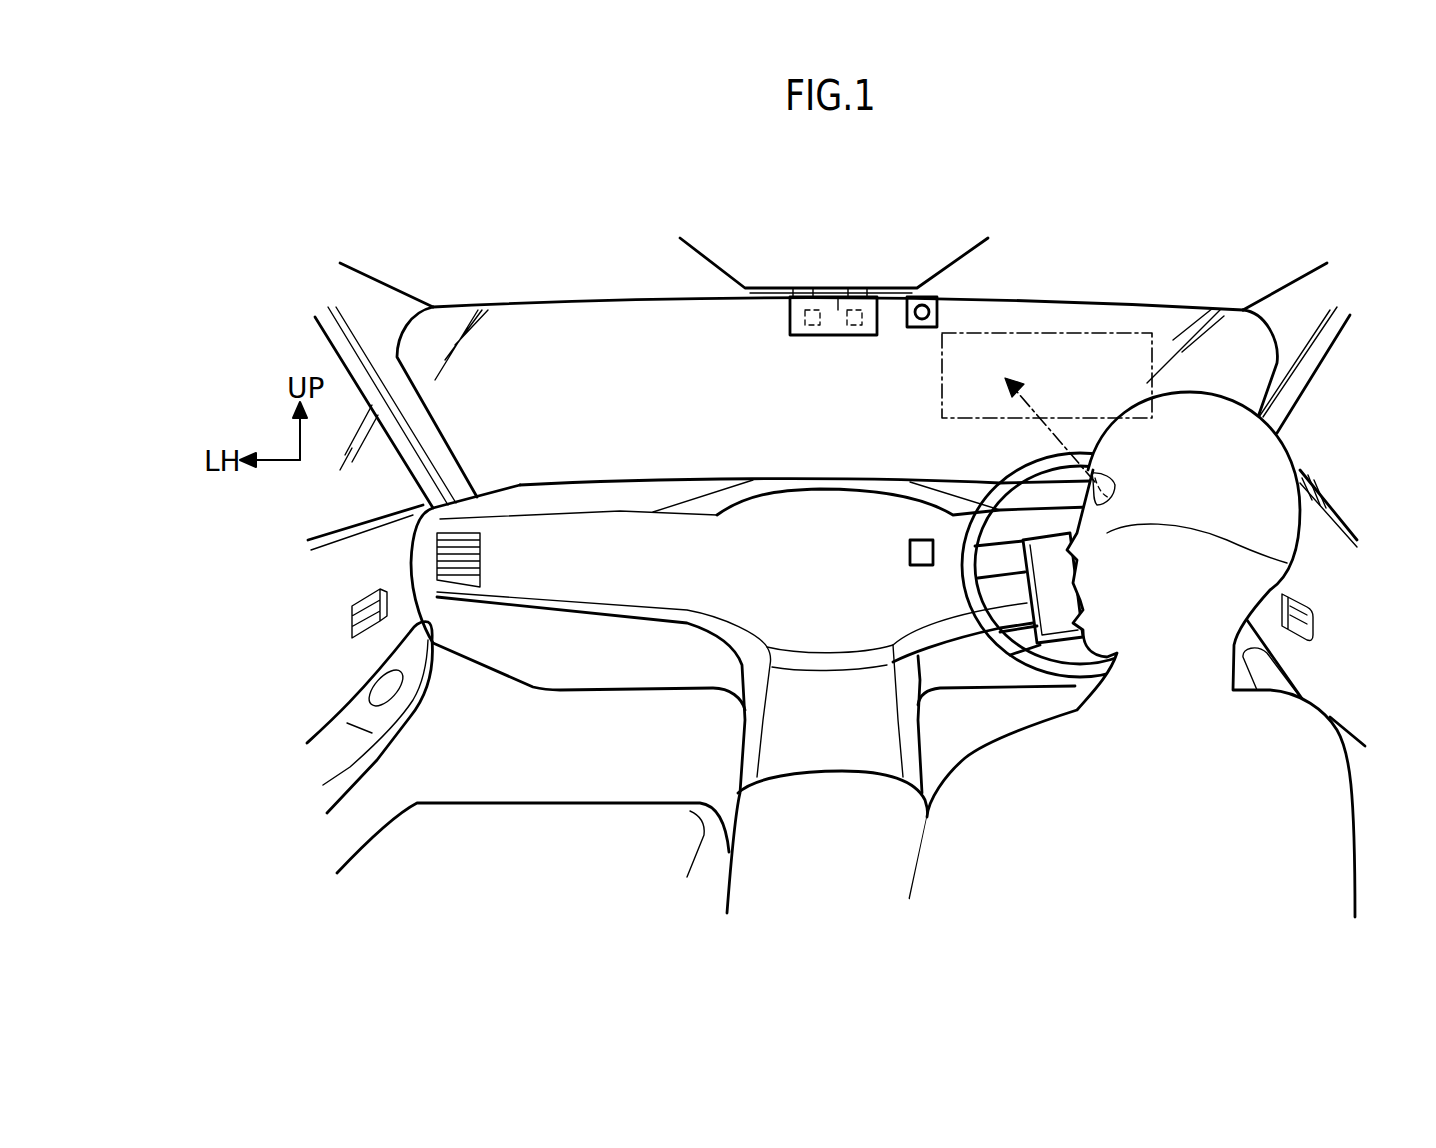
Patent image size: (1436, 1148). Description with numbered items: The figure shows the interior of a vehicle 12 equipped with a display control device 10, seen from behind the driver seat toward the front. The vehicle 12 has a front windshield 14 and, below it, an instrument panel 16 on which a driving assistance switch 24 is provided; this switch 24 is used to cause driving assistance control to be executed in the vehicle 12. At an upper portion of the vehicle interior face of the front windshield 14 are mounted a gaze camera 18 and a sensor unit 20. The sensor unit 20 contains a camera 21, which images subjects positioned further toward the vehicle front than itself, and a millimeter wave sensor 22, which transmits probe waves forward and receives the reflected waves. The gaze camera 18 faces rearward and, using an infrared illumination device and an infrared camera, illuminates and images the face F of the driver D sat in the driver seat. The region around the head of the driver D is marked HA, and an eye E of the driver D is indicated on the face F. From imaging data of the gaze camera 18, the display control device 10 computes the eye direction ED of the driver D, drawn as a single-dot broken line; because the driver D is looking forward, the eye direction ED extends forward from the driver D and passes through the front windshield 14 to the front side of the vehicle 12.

The display control device 10 is at (843, 408).
The vehicle 12 is at (1087, 273).
The front windshield 14 is at (582, 313).
The instrument panel 16 is at (593, 527).
The gaze camera 18 is at (917, 295).
The sensor unit 20 is at (783, 307).
The camera 21 is at (808, 307).
The millimeter wave sensor 22 is at (857, 307).
The driving assistance switch 24 is at (918, 540).
The head area HA is at (1143, 333).
The eye direction ED is at (1020, 390).
The eye of driver E is at (1110, 487).
The driver D is at (1290, 450).
The face F is at (1287, 565).